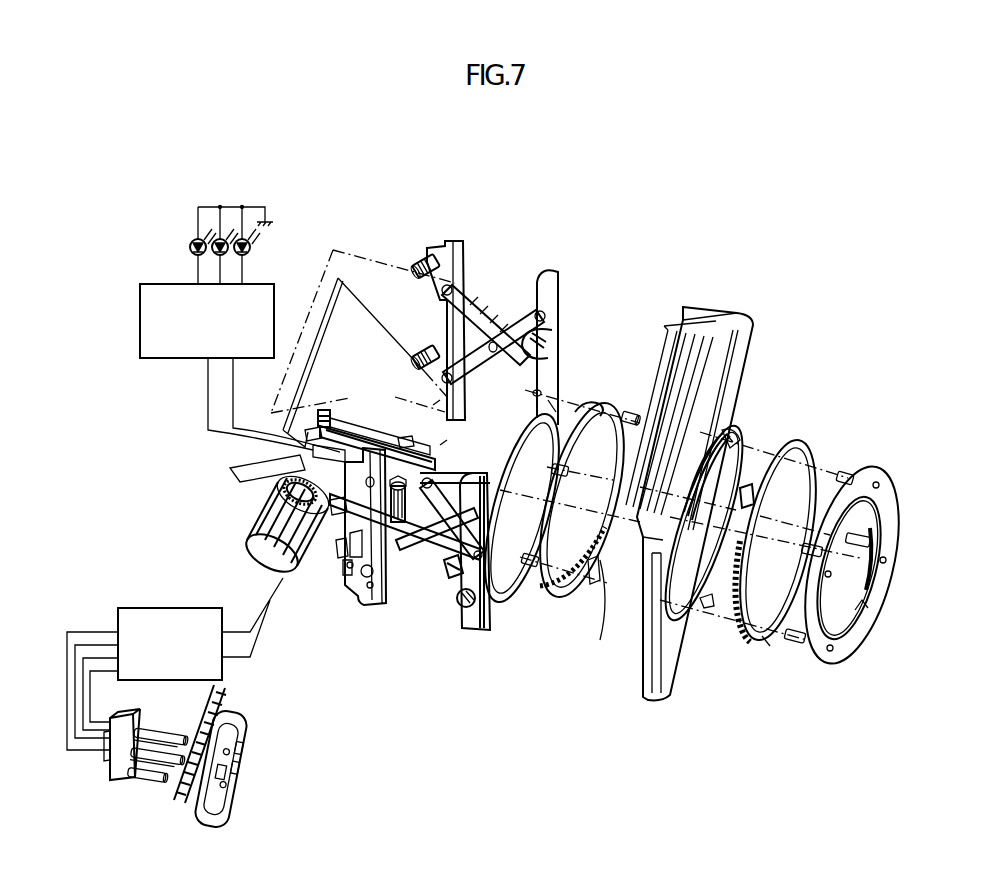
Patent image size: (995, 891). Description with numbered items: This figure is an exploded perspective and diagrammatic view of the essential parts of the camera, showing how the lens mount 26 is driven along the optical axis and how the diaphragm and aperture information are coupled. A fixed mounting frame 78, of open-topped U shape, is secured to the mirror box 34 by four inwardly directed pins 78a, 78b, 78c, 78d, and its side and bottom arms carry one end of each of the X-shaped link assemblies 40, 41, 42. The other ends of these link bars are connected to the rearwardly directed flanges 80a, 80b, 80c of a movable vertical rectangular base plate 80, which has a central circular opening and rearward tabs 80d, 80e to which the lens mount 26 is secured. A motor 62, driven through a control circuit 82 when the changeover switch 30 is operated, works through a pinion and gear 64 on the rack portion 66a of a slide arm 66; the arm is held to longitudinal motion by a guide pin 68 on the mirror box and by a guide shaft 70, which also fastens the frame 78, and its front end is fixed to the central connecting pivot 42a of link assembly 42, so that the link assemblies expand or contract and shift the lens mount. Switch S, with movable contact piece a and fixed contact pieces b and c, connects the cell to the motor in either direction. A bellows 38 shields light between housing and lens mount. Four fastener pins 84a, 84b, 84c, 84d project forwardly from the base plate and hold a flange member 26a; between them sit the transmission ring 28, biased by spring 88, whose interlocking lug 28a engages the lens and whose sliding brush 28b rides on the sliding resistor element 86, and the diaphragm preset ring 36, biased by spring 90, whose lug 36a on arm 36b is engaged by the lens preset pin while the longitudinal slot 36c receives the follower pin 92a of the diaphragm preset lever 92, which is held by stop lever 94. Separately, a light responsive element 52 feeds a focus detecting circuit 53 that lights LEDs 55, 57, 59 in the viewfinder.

The lens mount 26 is at (737, 322).
The flange member 26a is at (887, 508).
The transmission ring 28 is at (800, 462).
The interlocking lug 28a is at (766, 646).
The sliding brush 28b is at (705, 608).
The changeover switch 30 is at (237, 748).
The mirror box 34 is at (340, 258).
The diaphragm preset ring 36 is at (574, 435).
The lug 36a is at (590, 580).
The arm 36b is at (433, 407).
The longitudinal slot 36c is at (440, 445).
The bellows 38 is at (680, 357).
The link assembly 40 is at (400, 603).
The link assembly 41 is at (468, 296).
The link assembly 42 is at (470, 587).
The central connecting pivot 42a is at (483, 627).
The light responsive element 52 is at (230, 468).
The focus detecting circuit 53 is at (140, 329).
The LED 55 is at (247, 242).
The LED 57 is at (218, 240).
The LED 59 is at (192, 242).
The motor 62 is at (258, 535).
The pinion and gear 64 is at (270, 483).
The slide arm 66 is at (328, 515).
The rack portion 66a is at (340, 558).
The guide pin 68 is at (287, 482).
The guide shaft 70 is at (400, 438).
The fixed mounting frame 78 is at (455, 248).
The pin 78a is at (427, 283).
The pin 78b is at (420, 360).
The pin 78c is at (313, 452).
The pin 78d is at (350, 560).
The movable base plate 80 is at (557, 307).
The flange 80a is at (548, 395).
The flange 80b is at (538, 278).
The flange 80c is at (525, 575).
The tab 80d is at (460, 606).
The tab 80e is at (525, 335).
The control circuit 82 is at (140, 608).
The fastener pin 84a is at (637, 410).
The fastener pin 84b is at (630, 655).
The fastener pin 84c is at (777, 650).
The fastener pin 84d is at (597, 615).
The sliding resistor element 86 is at (727, 440).
The spring 88 is at (745, 640).
The spring 90 is at (607, 620).
The diaphragm preset lever 92 is at (338, 432).
The pin 92a is at (372, 560).
The stop lever 94 is at (313, 410).
The switch S is at (123, 826).
The movable contact piece a is at (158, 778).
The fixed contact piece b is at (144, 780).
The fixed contact piece c is at (170, 777).